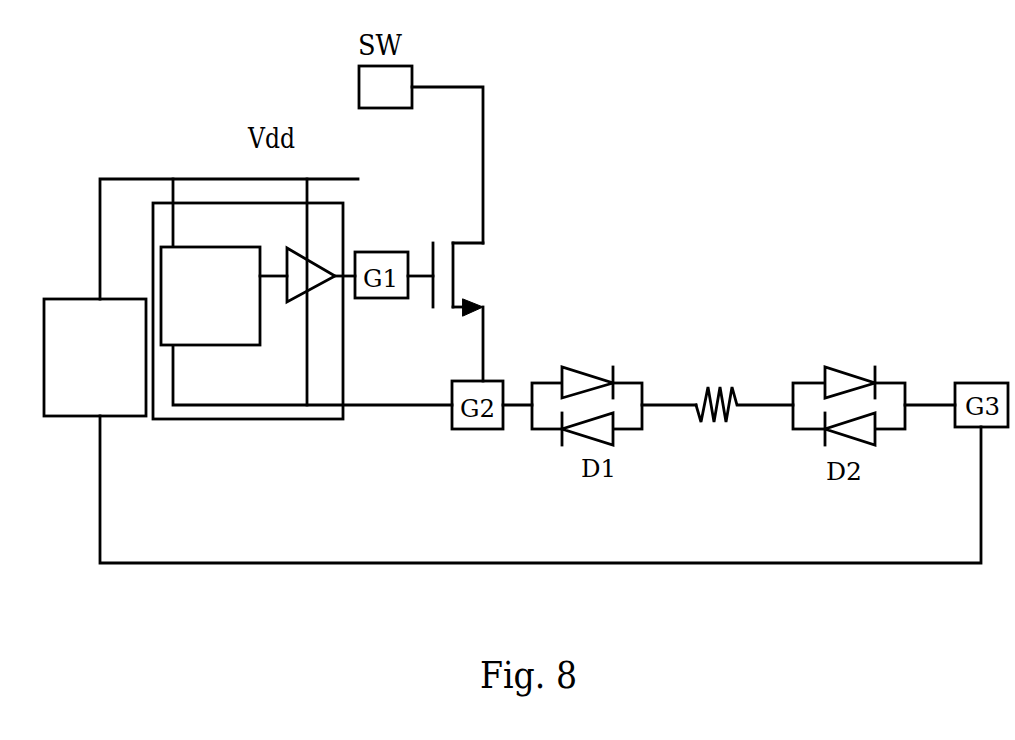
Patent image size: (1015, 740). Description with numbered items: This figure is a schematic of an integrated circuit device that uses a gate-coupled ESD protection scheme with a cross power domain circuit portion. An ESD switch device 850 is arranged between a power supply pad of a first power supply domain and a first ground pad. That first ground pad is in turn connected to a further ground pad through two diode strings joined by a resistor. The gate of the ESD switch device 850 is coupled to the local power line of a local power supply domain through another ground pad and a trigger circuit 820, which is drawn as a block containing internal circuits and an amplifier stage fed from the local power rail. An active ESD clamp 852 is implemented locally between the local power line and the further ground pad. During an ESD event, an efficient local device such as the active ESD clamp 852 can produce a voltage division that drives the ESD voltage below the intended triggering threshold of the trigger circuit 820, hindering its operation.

The trigger circuit 820 is at (344, 218).
The ESD switch device 850 is at (493, 278).
The active ESD clamp 852 is at (95, 357).